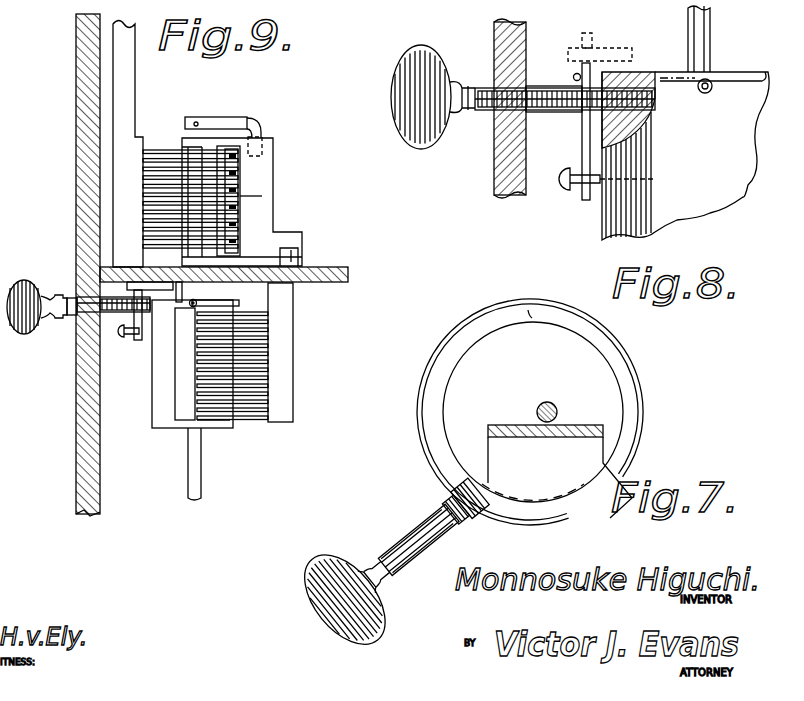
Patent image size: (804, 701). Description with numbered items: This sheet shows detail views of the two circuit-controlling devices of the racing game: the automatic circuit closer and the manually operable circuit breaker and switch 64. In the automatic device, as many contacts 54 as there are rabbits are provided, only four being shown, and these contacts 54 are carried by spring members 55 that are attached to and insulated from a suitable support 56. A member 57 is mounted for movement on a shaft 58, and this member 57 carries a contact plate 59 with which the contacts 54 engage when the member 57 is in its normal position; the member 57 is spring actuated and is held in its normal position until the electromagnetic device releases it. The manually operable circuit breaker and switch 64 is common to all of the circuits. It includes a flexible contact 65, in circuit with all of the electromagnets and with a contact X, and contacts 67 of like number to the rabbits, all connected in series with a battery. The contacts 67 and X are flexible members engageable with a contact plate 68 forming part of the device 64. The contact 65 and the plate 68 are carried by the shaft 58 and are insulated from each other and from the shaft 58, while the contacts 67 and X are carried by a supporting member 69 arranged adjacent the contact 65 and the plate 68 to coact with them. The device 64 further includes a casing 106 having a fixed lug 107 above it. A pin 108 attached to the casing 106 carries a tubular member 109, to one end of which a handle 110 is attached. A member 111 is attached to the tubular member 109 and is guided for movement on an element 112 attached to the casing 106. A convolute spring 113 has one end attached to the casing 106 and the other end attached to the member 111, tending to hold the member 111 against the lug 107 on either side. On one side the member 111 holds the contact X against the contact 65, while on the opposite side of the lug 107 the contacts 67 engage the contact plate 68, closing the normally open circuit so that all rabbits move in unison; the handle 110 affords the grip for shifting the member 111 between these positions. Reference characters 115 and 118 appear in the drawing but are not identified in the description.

In FIG. 9, the contacts 54 is at (240, 198).
In FIG. 9, the spring members 55 is at (157, 166).
In FIG. 9, the support 56 is at (117, 200).
In FIG. 9, the member 57 is at (273, 160).
In FIG. 9, the shaft 58 is at (273, 140).
In FIG. 8, the shaft 58 is at (710, 38).
In FIG. 7, the shaft 58 is at (554, 406).
In FIG. 9, the contact plate 59 is at (238, 200).
In FIG. 9, the manually operable circuit breaker and switch 64 is at (170, 430).
In FIG. 9, the flexible contact 65 is at (215, 422).
In FIG. 9, the contacts 67 is at (270, 322).
In FIG. 9, the contact plate 68 is at (183, 385).
In FIG. 9, the supporting member 69 is at (293, 386).
In FIG. 8, the casing 106 is at (685, 156).
In FIG. 7, the casing 106 is at (632, 402).
In FIG. 9, the fixed lug 107 is at (143, 273).
In FIG. 8, the fixed lug 107 is at (600, 46).
In FIG. 7, the fixed lug 107 is at (612, 519).
In FIG. 8, the pin 108 is at (567, 110).
In FIG. 9, the tubular member 109 is at (110, 293).
In FIG. 8, the tubular member 109 is at (548, 87).
In FIG. 7, the tubular member 109 is at (423, 524).
In FIG. 9, the handle 110 is at (28, 336).
In FIG. 8, the handle 110 is at (432, 152).
In FIG. 7, the handle 110 is at (392, 610).
In FIG. 9, the member 111 is at (142, 332).
In FIG. 8, the member 111 is at (582, 152).
In FIG. 7, the member 111 is at (447, 472).
In FIG. 9, the element 112 is at (130, 340).
In FIG. 8, the element 112 is at (566, 192).
In FIG. 8, the convolute spring 113 is at (573, 76).
In FIG. 8, the pivot 115 is at (731, 90).
In FIG. 9, the ring 118 is at (262, 296).
In FIG. 7, the ring 118 is at (440, 350).